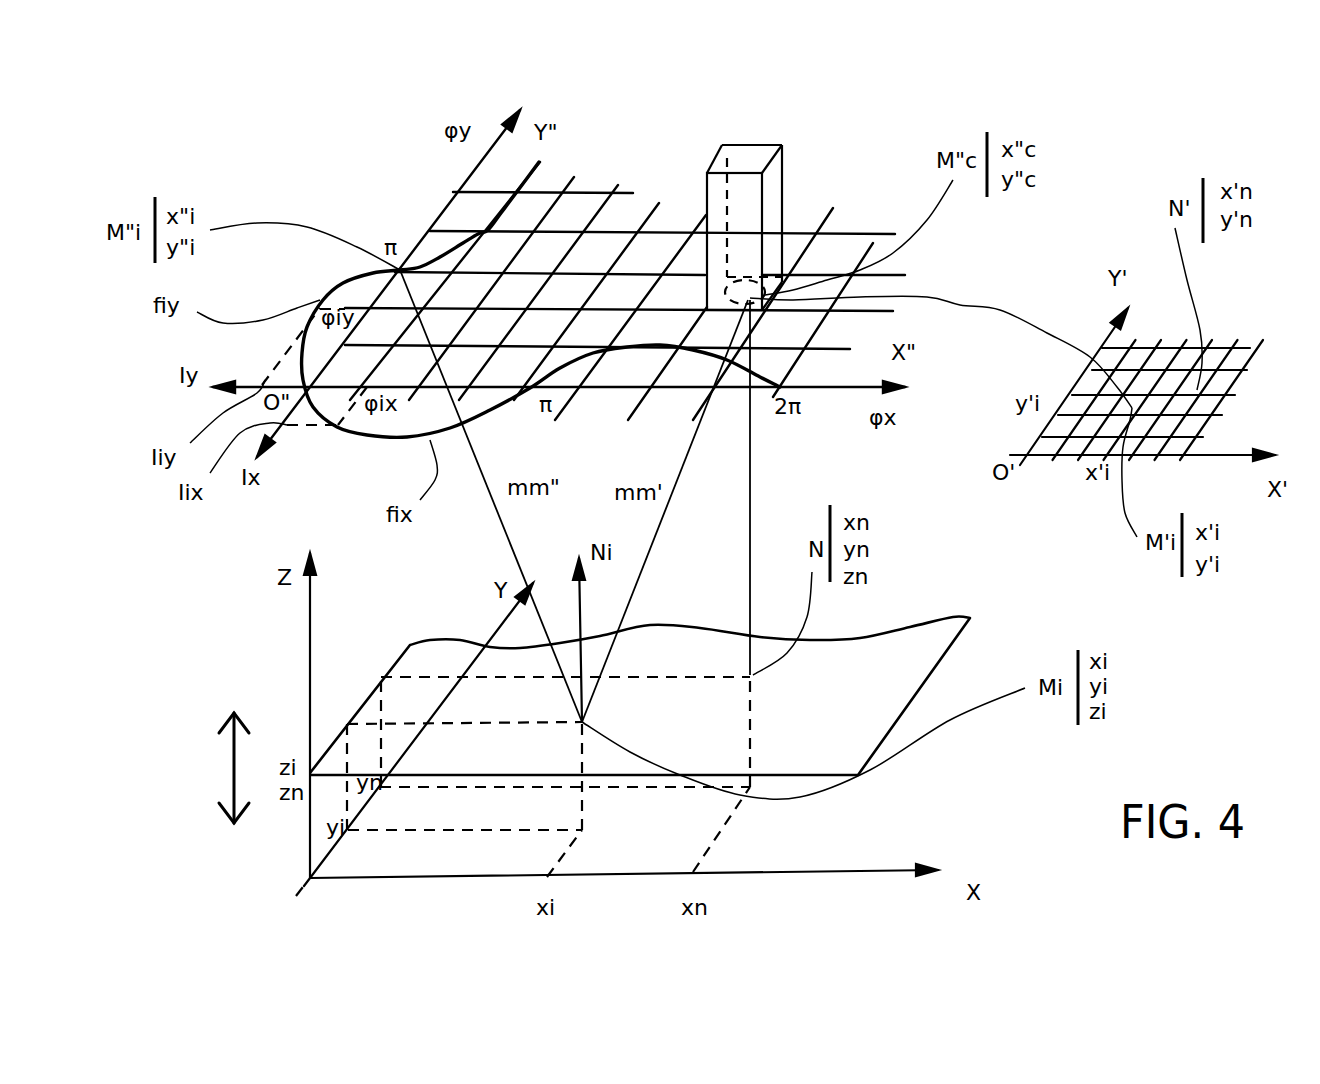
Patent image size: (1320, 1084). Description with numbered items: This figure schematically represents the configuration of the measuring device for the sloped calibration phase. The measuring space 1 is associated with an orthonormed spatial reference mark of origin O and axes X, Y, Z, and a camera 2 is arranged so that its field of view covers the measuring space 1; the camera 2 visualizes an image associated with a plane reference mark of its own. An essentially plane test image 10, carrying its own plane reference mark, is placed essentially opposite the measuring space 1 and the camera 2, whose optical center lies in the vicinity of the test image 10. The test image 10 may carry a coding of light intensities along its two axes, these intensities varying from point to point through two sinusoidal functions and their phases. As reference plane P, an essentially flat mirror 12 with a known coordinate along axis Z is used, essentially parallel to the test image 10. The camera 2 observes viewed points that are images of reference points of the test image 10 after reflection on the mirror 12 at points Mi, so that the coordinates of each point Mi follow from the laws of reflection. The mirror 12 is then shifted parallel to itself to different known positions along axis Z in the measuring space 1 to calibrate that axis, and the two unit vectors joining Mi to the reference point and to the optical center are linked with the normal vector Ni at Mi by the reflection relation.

The measuring space 1 is at (682, 687).
The camera 2 is at (778, 215).
The test image 10 is at (530, 230).
The mirror 12 is at (840, 670).